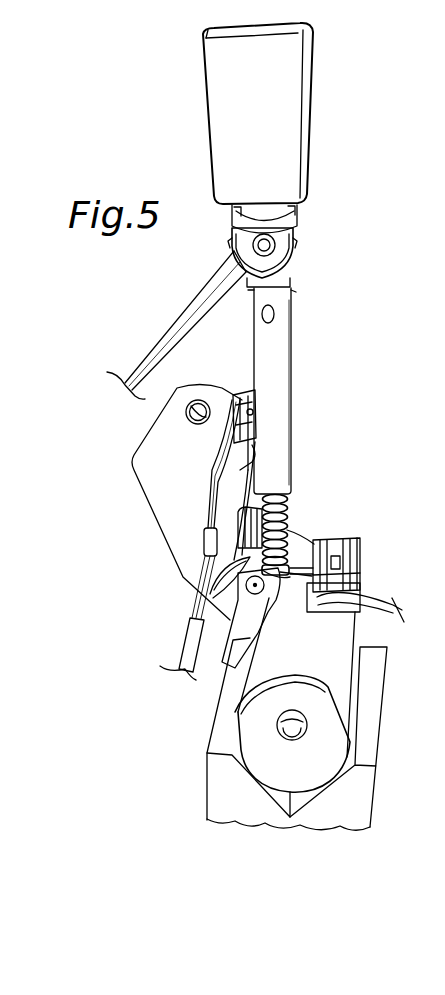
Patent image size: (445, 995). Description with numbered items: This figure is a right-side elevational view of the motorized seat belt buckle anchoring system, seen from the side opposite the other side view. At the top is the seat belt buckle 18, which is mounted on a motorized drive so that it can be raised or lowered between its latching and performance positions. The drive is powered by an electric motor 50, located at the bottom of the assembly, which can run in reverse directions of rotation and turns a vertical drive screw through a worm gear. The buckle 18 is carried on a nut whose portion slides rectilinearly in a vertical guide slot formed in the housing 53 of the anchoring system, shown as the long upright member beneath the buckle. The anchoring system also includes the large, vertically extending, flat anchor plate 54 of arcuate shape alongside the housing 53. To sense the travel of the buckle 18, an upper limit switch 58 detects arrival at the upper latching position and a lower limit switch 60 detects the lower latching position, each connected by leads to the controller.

The seat belt buckle 18 is at (283, 128).
The electric motor 50 is at (268, 659).
The housing 53 is at (278, 373).
The anchor plate 54 is at (175, 518).
The upper limit switch 58 is at (250, 398).
The lower limit switch 60 is at (287, 522).